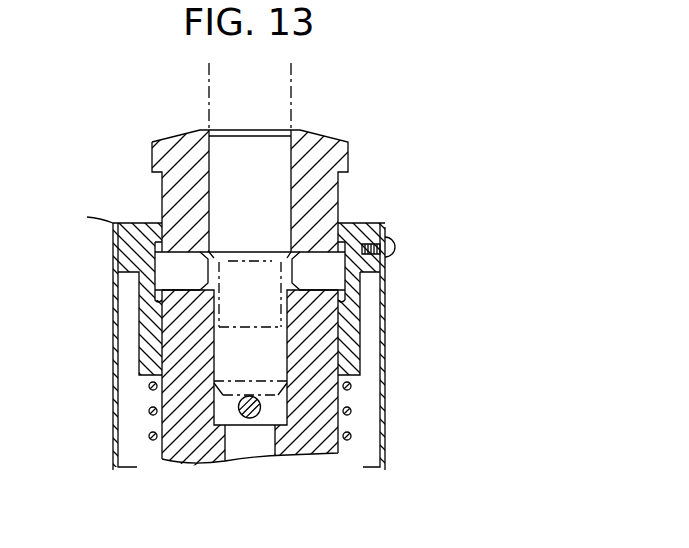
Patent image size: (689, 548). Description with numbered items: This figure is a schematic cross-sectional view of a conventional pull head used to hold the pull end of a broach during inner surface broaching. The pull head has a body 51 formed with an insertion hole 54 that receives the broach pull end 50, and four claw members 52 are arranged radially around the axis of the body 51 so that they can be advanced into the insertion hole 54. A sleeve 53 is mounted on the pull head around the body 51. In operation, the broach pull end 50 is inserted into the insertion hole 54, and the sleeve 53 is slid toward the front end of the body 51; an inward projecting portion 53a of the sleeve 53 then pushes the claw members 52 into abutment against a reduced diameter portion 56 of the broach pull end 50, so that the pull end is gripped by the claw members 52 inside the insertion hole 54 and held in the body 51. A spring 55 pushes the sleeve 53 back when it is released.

The broach pull end 50 is at (292, 73).
The body 51 is at (338, 185).
The claw members 52 is at (163, 277).
The sleeve 53 is at (385, 228).
The inward projecting portion 53a is at (337, 296).
The insertion hole 54 is at (213, 407).
The spring 55 is at (353, 407).
The reduced diameter portion 56 is at (362, 342).